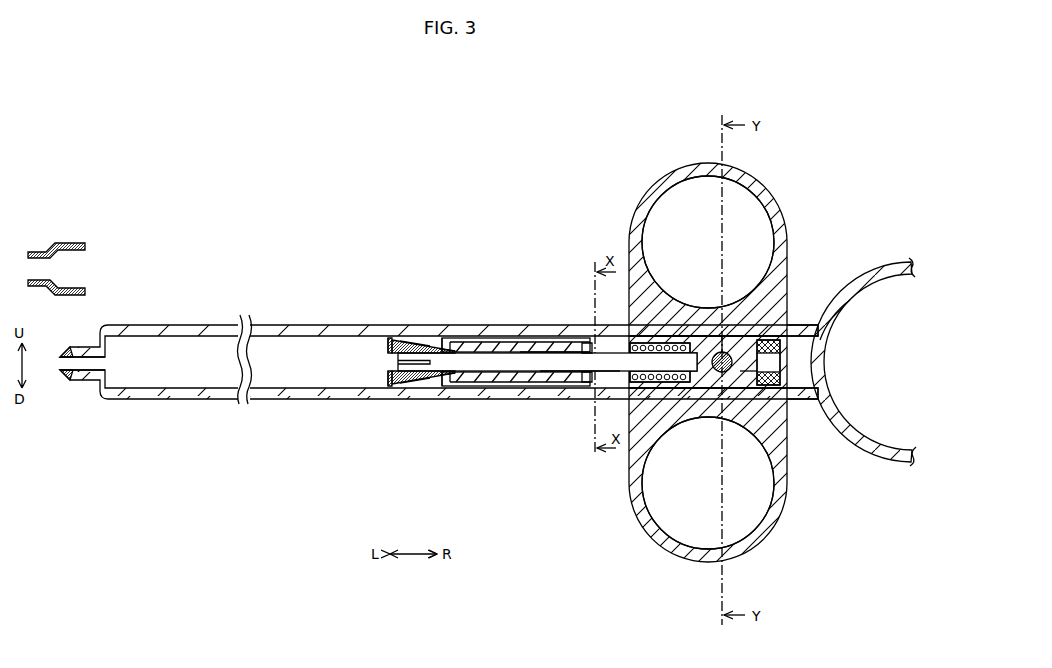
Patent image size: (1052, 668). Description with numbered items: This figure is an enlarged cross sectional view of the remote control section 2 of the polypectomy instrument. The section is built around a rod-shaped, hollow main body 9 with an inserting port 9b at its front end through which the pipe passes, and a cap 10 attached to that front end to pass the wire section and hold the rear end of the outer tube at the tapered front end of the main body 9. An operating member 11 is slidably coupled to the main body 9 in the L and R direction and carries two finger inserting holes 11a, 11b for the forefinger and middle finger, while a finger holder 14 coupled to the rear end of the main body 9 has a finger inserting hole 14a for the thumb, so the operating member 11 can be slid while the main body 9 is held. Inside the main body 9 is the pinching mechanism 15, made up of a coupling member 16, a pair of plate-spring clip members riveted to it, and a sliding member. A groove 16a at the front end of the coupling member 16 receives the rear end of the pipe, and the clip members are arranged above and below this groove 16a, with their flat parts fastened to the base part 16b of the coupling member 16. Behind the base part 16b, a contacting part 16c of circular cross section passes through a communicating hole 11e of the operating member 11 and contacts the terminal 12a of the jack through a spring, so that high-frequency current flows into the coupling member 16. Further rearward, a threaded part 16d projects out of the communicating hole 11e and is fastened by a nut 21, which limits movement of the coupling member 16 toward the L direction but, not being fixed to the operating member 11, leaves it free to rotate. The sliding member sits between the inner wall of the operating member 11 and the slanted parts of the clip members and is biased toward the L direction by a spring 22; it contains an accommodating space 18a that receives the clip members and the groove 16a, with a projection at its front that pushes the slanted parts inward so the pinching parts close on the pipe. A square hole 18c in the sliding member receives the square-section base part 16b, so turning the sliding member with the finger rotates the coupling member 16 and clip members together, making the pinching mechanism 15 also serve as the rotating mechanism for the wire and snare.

The remote control section 2 is at (569, 139).
The main body 9 is at (330, 325).
The inserting port 9b is at (102, 362).
The cap 10 is at (79, 247).
The operating member 11 is at (630, 223).
The finger inserting hole 11a is at (667, 211).
The finger inserting hole 11b is at (664, 510).
The communicating hole 11e is at (728, 336).
The terminal 12a is at (738, 376).
The finger holder 14 is at (887, 259).
The finger inserting hole 14a is at (861, 287).
The pinching mechanism 15 is at (533, 283).
The coupling member 16 is at (540, 355).
The groove 16a is at (398, 362).
The base part 16b is at (573, 375).
The contacting part 16c is at (707, 370).
The threaded part 16d is at (779, 362).
The accommodating space 18a is at (546, 386).
The square hole 18c is at (603, 376).
The nut 21 is at (798, 325).
The spring 22 is at (632, 345).